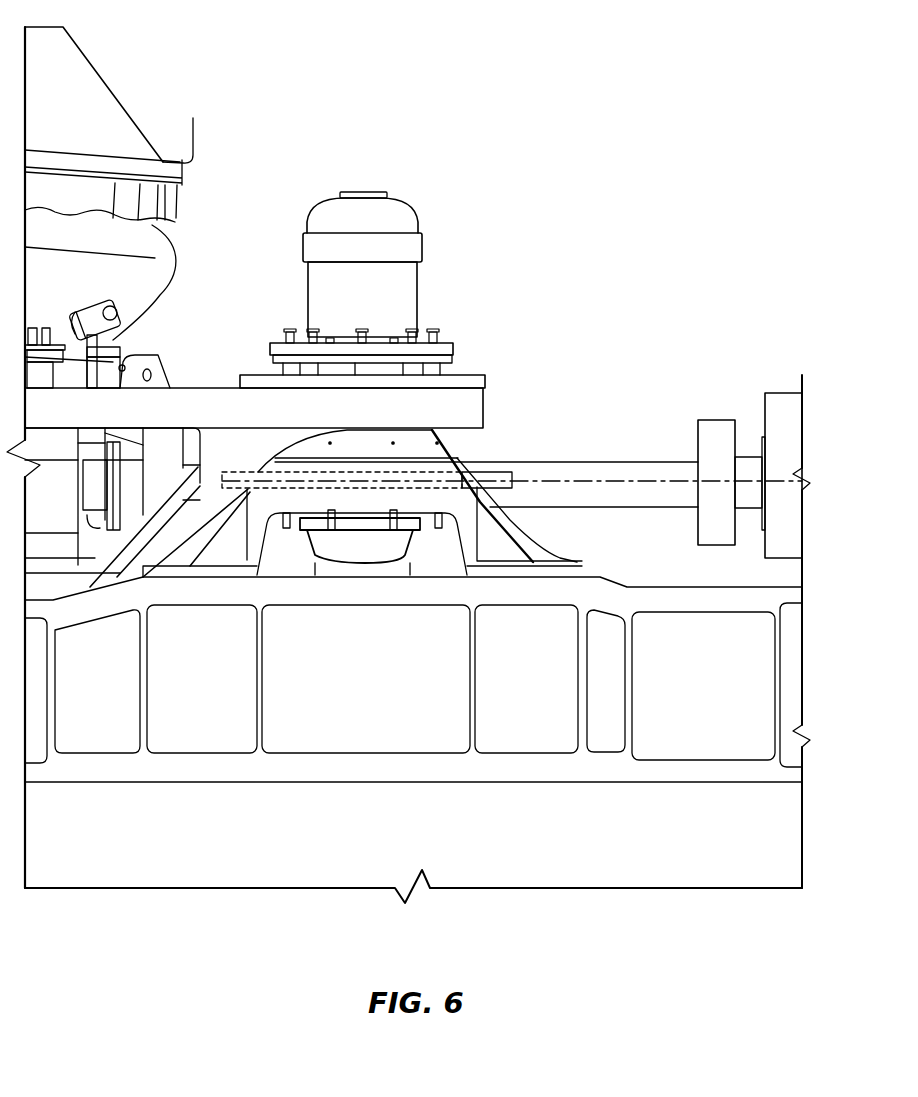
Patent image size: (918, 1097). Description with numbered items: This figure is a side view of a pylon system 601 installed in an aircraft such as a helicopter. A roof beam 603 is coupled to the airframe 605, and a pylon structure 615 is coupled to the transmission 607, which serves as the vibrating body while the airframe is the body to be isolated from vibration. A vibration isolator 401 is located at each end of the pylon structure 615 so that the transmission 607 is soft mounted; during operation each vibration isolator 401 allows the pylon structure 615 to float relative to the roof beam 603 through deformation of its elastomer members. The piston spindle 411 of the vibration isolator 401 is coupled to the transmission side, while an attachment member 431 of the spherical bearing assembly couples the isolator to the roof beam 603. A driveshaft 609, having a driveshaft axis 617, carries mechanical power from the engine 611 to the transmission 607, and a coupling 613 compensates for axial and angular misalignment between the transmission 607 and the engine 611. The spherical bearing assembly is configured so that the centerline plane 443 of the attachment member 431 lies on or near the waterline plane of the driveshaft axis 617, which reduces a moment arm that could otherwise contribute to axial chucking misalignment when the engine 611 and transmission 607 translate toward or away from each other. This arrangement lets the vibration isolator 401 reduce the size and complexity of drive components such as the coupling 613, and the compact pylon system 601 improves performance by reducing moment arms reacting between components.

The pylon system 601 is at (620, 90).
The transmission 607 is at (180, 203).
The pylon structure 615 is at (227, 388).
The vibration isolator 401 is at (422, 285).
The piston spindle 411 is at (485, 375).
The attachment member 431 is at (493, 467).
The centerline plane 443 is at (500, 490).
The driveshaft axis 617 is at (593, 481).
The driveshaft 609 is at (623, 507).
The coupling 613 is at (713, 420).
The engine 611 is at (777, 393).
The roof beam 603 is at (265, 680).
The airframe 605 is at (418, 847).